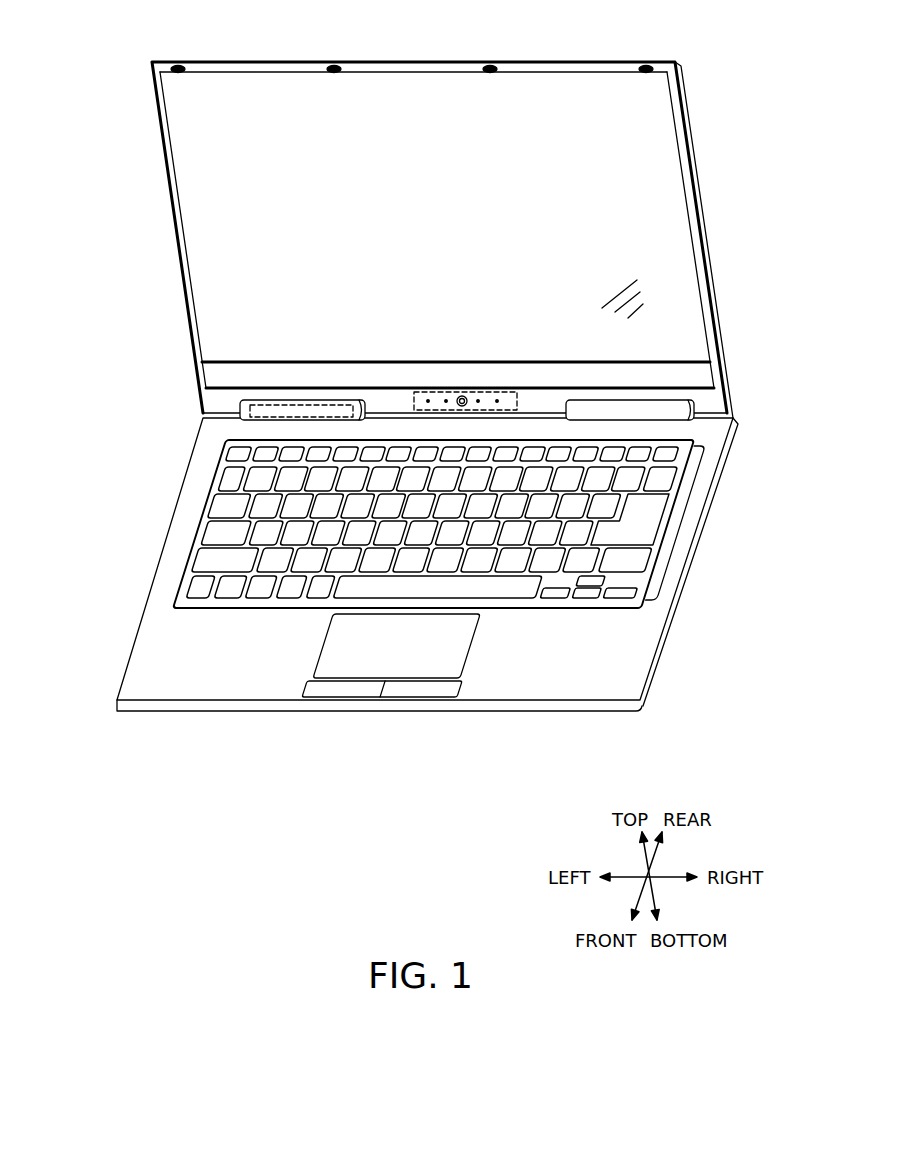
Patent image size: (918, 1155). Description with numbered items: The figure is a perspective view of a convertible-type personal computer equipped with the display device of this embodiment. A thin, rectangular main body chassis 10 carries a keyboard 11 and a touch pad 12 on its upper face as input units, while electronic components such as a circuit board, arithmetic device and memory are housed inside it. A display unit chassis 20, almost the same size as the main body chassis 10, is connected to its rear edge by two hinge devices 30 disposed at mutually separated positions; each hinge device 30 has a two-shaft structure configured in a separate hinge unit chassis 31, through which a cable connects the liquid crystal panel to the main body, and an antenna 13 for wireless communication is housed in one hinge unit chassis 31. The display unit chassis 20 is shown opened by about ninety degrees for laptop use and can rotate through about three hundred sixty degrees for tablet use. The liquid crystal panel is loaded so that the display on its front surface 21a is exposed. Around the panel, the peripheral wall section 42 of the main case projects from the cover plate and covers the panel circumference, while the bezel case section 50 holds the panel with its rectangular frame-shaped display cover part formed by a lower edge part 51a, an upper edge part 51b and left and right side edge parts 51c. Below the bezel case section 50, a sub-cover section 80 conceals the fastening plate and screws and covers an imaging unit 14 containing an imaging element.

The main body chassis 10 is at (650, 708).
The keyboard 11 is at (680, 523).
The touch pad 12 is at (455, 660).
The antenna 13 is at (297, 402).
The imaging unit 14 is at (395, 393).
The display unit chassis 20 is at (676, 62).
The front surface 21a is at (652, 148).
The hinge device 30 is at (263, 397).
The hinge unit chassis 31 is at (253, 403).
The peripheral wall section 42 is at (562, 62).
The bezel case section 50 is at (150, 62).
The lower edge part 51a is at (462, 385).
The upper edge part 51b is at (418, 62).
The side edge part 51c is at (155, 125).
The sub-cover section 80 is at (545, 402).